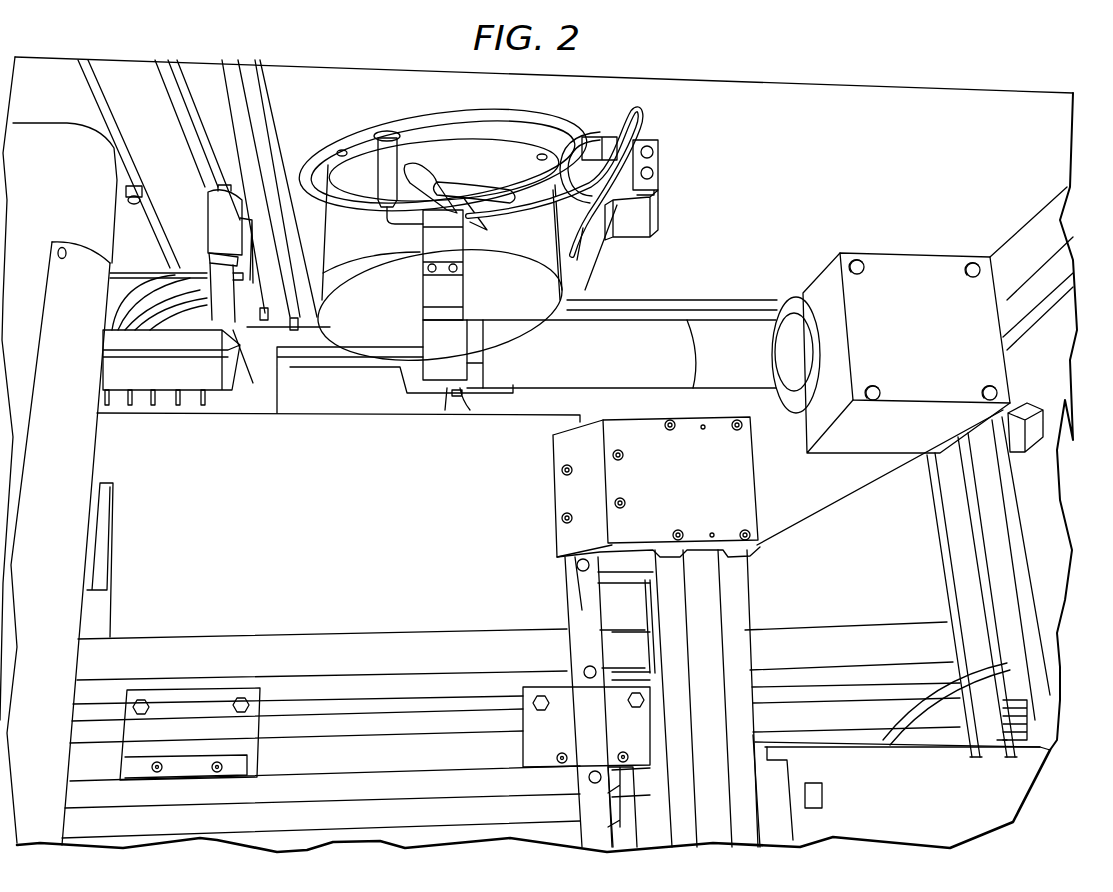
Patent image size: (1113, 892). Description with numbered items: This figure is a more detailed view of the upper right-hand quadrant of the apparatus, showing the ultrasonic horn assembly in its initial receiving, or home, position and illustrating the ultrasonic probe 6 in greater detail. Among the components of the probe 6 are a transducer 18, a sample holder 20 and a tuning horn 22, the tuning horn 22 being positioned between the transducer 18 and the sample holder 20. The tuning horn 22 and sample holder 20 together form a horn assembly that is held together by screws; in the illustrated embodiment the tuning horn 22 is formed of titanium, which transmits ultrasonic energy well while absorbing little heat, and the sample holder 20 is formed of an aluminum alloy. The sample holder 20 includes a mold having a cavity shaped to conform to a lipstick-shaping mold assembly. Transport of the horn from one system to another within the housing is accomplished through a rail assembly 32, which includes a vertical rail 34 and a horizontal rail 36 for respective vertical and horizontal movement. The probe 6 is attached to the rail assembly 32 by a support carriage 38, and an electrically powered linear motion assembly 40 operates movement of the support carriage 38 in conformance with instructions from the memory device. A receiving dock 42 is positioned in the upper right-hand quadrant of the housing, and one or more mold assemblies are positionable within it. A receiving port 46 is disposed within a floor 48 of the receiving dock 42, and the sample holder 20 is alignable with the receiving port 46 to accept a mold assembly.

The ultrasonic probe 6 is at (845, 468).
The transducer 18 is at (931, 333).
The sample holder 20 is at (445, 348).
The tuning horn 22 is at (663, 337).
The rail assembly 32 is at (758, 675).
The vertical rail 34 is at (735, 600).
The horizontal rail 36 is at (368, 703).
The support carriage 38 is at (735, 478).
The linear motion assembly 40 is at (1003, 783).
The receiving dock 42 is at (370, 173).
The receiving port 46 is at (438, 318).
The floor 48 is at (513, 300).